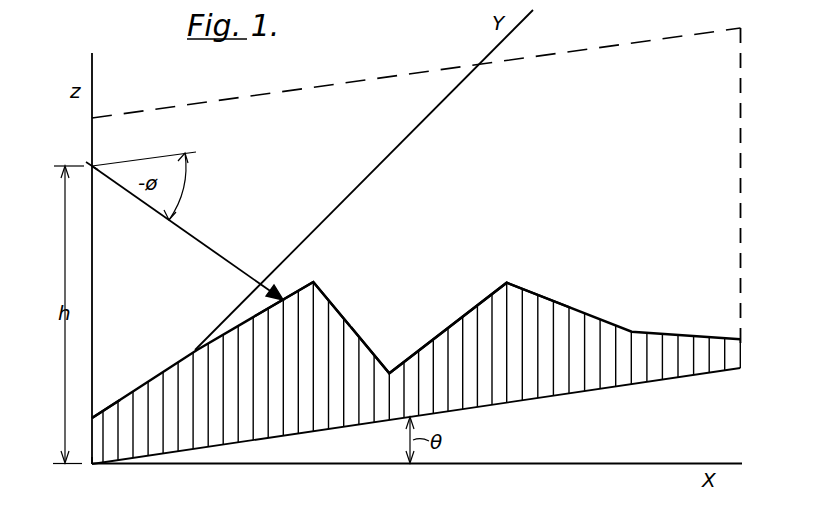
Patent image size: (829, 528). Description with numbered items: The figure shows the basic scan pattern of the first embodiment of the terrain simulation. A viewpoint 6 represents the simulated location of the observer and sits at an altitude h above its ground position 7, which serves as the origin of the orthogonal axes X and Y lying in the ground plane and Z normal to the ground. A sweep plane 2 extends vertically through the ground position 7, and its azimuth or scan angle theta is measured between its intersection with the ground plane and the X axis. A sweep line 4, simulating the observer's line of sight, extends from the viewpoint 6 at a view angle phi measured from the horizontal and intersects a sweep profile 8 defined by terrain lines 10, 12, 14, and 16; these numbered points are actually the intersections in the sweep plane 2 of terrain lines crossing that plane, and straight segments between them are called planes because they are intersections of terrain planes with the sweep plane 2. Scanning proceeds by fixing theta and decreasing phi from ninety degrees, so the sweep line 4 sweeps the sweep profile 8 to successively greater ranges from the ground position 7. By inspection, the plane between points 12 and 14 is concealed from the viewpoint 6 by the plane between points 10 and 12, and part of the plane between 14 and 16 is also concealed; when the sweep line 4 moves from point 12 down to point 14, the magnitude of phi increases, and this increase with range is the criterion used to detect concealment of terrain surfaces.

The sweep plane 2 is at (706, 177).
The sweep line 4 is at (216, 250).
The viewpoint 6 is at (92, 166).
The ground position 7 is at (92, 465).
The sweep profile 8 is at (580, 312).
The terrain line 10 is at (90, 418).
The terrain line 12 is at (313, 282).
The terrain line 14 is at (389, 372).
The terrain line 16 is at (507, 283).